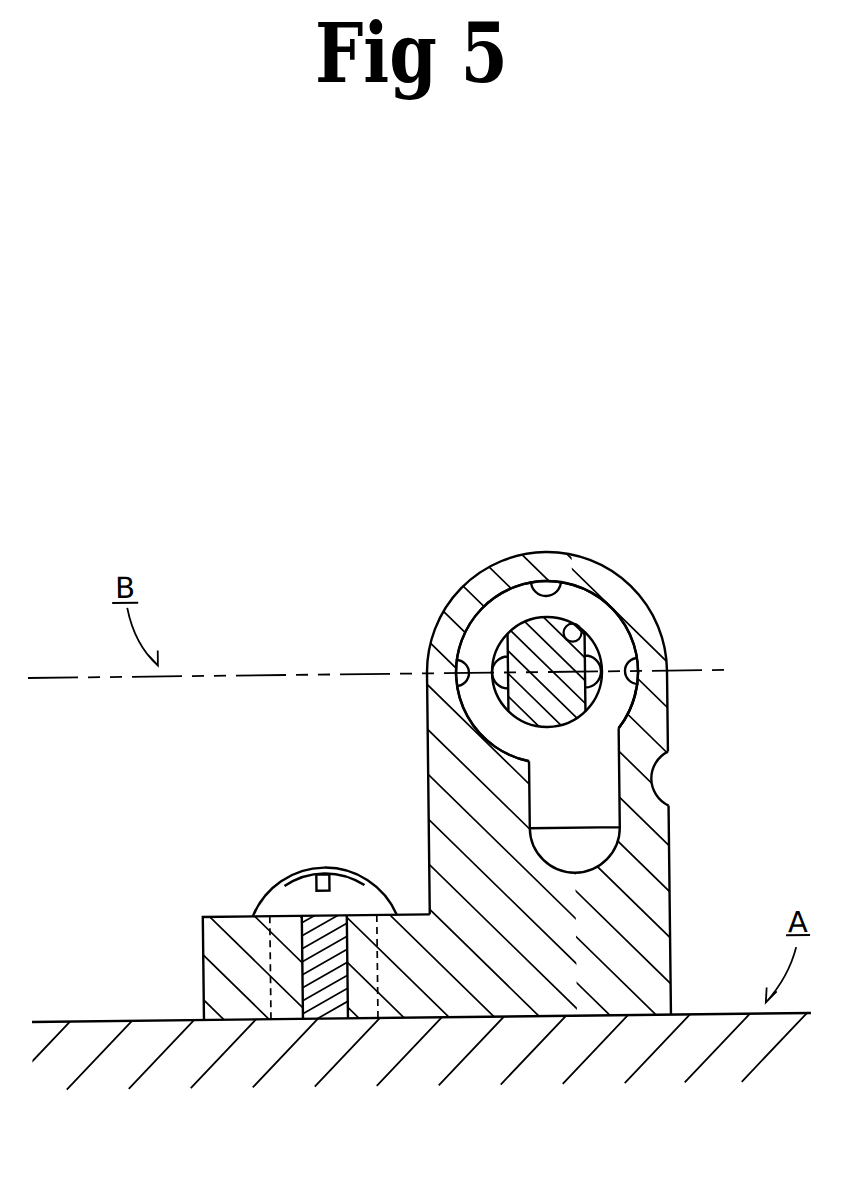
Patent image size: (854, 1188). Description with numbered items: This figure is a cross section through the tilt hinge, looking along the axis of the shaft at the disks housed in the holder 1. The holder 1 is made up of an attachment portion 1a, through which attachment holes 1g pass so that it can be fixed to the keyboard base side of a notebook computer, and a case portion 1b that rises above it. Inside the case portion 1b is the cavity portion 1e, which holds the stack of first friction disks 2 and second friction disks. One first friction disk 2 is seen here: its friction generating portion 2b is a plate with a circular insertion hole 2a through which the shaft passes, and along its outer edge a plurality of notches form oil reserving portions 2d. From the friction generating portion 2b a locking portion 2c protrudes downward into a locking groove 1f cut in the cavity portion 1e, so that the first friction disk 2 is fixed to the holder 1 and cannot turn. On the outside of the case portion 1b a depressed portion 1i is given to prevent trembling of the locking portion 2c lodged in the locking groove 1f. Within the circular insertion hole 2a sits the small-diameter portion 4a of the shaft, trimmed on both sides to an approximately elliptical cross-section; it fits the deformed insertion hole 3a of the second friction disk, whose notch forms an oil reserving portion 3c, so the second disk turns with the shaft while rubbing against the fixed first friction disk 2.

The holder 1 is at (694, 856).
The attachment portion 1a is at (212, 956).
The case portion 1b is at (590, 558).
The cavity portion 1e is at (508, 612).
The locking groove 1f is at (614, 793).
The attachment hole 1g is at (271, 980).
The depressed portion 1i is at (661, 789).
The first friction disk 2 is at (584, 627).
The circular insertion hole 2a is at (597, 694).
The friction generating portion 2b is at (508, 611).
The locking portion 2c is at (657, 760).
The oil reserving portion 2d is at (550, 575).
The deformed insertion hole 3a is at (572, 620).
The oil reserving portion 3c is at (505, 675).
The small-diameter portion 4a is at (533, 705).